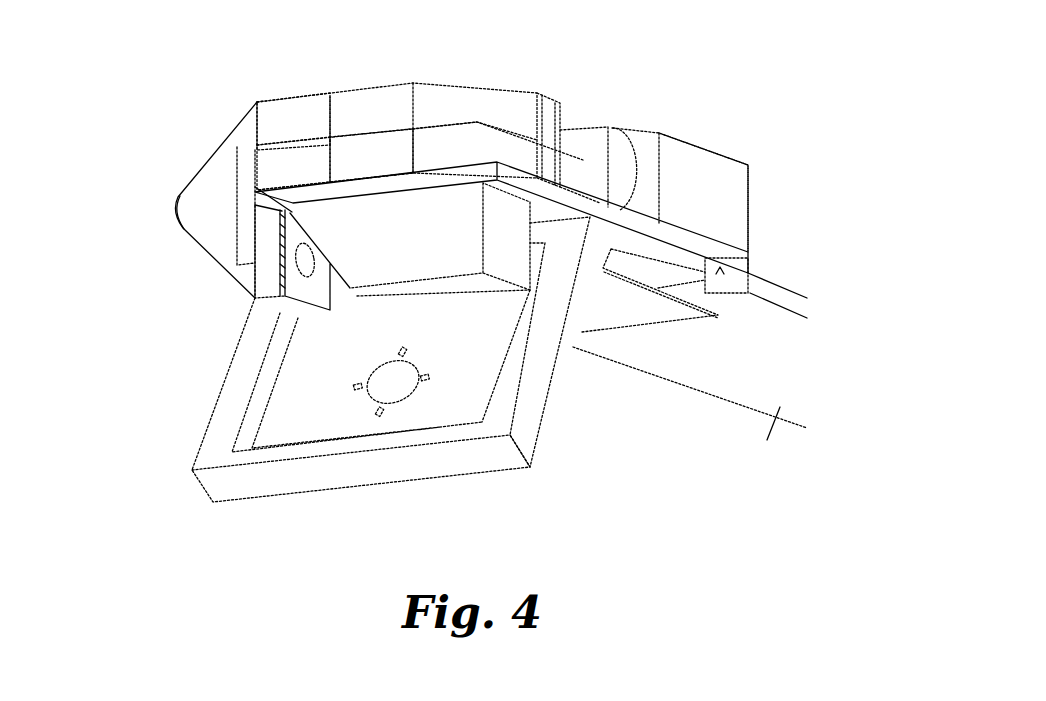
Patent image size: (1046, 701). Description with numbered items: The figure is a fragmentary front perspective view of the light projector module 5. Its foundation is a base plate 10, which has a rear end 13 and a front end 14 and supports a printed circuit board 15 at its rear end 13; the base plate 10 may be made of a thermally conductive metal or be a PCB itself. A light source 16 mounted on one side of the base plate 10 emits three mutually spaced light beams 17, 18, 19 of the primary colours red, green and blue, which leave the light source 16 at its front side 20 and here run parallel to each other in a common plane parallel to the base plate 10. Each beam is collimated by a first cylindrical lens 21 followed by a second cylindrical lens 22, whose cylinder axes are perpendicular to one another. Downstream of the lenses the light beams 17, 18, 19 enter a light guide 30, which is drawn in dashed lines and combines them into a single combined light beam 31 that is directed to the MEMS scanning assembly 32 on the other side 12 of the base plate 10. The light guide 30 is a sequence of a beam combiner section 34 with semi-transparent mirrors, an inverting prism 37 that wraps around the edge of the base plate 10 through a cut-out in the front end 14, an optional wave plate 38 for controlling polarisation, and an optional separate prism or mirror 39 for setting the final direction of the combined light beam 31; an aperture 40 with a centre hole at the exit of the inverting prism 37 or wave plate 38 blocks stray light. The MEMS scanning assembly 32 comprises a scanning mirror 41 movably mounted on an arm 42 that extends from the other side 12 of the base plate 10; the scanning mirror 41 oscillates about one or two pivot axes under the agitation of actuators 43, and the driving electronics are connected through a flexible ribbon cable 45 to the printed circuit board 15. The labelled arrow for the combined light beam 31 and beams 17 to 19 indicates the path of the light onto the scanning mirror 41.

The light projector module 5 is at (678, 473).
The base plate 10 is at (745, 263).
The other side 12 is at (722, 278).
The rear end 13 is at (740, 107).
The front end 14 is at (195, 123).
The printed circuit board 15 is at (690, 409).
The light source 16 is at (733, 203).
The light beam 17 is at (293, 163).
The light beam 18 is at (371, 155).
The light beam 19 is at (482, 127).
The front side 20 is at (648, 148).
The first cylindrical lens 21 is at (618, 137).
The second cylindrical lens 22 is at (548, 112).
The light guide 30 is at (367, 70).
The combined light beam 31 is at (238, 172).
The MEMS scanning assembly 32 is at (168, 388).
The beam combiner section 34 is at (297, 115).
The inverting prism 37 is at (202, 228).
The wave plate 38 is at (267, 280).
The prism or mirror 39 is at (455, 288).
The aperture 40 is at (318, 300).
The scanning mirror 41 is at (405, 387).
The arm 42 is at (552, 378).
The actuators 43 is at (407, 353).
The ribbon cable 45 is at (667, 317).